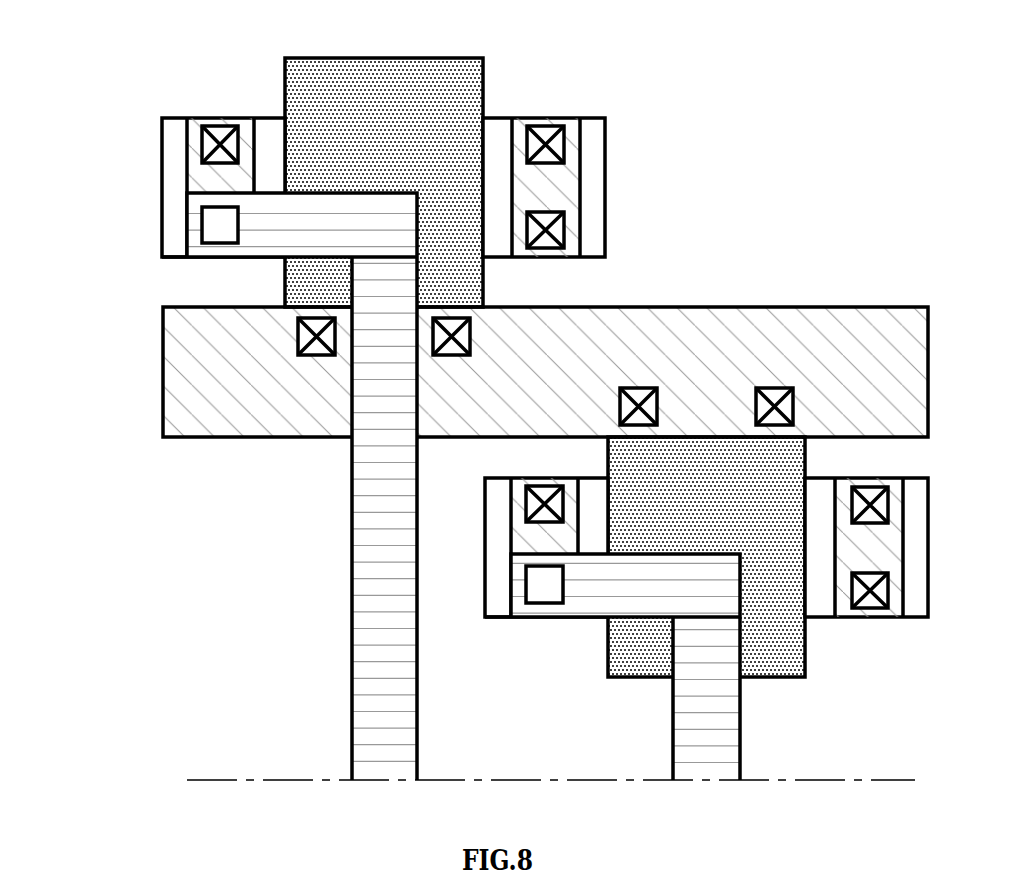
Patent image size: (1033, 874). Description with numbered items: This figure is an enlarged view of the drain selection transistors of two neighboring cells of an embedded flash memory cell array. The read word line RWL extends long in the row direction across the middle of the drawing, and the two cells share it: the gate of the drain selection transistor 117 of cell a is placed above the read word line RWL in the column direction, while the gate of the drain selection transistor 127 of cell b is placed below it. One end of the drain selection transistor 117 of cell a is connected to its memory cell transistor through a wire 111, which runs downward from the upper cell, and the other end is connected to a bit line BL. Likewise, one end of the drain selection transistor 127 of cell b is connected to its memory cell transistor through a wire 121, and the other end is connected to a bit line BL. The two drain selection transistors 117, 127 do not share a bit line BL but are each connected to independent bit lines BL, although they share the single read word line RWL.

The wire 111 is at (375, 562).
The drain selection transistor 117 is at (218, 126).
The wire 121 is at (733, 740).
The drain selection transistor 127 is at (547, 482).
The read word line RWL is at (182, 366).
The bit line BL is at (590, 118).